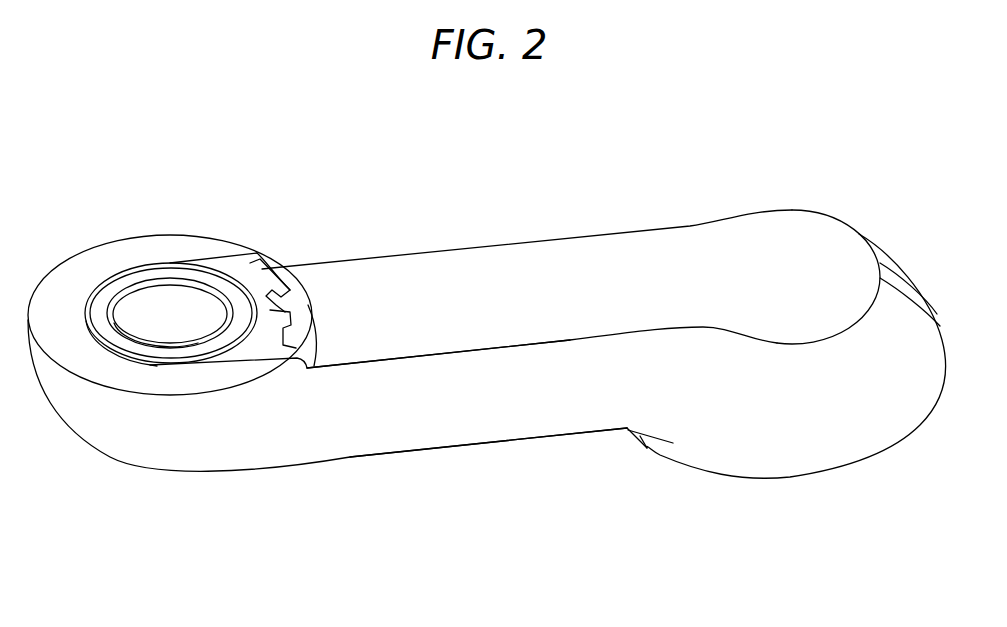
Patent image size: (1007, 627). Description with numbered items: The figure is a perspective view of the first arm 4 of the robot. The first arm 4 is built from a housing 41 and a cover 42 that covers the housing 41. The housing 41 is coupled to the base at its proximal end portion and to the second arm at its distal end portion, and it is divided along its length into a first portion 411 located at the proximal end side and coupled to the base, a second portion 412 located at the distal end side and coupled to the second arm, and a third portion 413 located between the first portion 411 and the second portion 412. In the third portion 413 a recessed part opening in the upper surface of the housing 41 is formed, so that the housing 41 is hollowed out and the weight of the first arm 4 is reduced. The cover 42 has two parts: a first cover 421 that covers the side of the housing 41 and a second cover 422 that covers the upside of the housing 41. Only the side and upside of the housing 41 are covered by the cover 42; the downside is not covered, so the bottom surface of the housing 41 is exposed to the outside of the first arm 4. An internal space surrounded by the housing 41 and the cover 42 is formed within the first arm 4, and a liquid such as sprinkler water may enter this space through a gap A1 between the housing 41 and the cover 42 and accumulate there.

The first arm 4 is at (667, 182).
The housing 41 is at (185, 303).
The first portion 411 is at (843, 433).
The second portion 412 is at (158, 307).
The third portion 413 is at (495, 280).
The cover 42 is at (560, 540).
The first cover 421 is at (551, 390).
The second cover 422 is at (418, 320).
The gap A1 is at (273, 275).